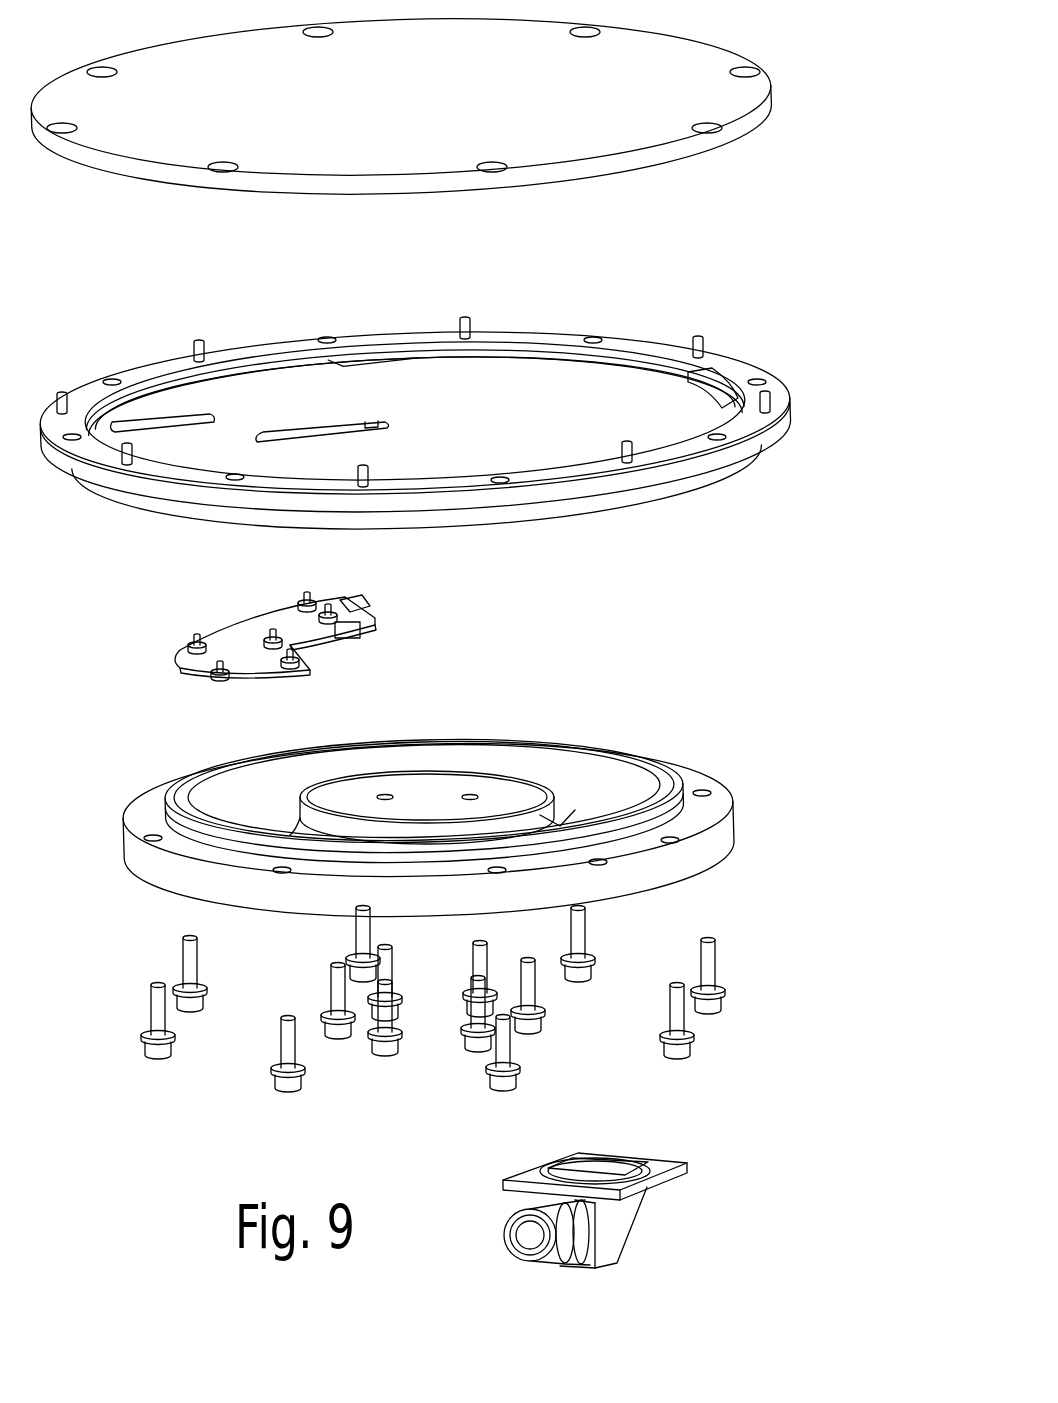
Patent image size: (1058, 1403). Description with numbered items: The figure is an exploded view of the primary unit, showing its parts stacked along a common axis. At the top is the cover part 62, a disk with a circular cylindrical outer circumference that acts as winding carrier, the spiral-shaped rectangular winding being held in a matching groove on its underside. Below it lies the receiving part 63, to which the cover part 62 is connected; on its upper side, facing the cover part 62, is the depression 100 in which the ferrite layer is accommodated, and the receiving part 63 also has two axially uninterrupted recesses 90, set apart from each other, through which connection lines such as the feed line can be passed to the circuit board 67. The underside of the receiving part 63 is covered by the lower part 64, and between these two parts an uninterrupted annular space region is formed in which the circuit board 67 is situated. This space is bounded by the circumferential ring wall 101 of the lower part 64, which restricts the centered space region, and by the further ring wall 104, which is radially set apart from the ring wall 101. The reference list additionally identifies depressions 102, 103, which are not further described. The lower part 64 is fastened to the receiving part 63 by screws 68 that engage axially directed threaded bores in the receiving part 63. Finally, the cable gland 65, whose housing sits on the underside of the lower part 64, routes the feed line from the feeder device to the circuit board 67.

The cover part 62 is at (560, 102).
The receiving part 63 is at (467, 400).
The lower part 64 is at (494, 768).
The cable gland 65 is at (610, 1223).
The circuit board 67 is at (233, 635).
The screws 68 is at (707, 970).
The recesses 90 is at (138, 418).
The depression 100 is at (670, 383).
The ring wall 101 is at (535, 820).
The depression 102 is at (428, 796).
The depression 103 is at (622, 789).
The ring wall 104 is at (670, 772).